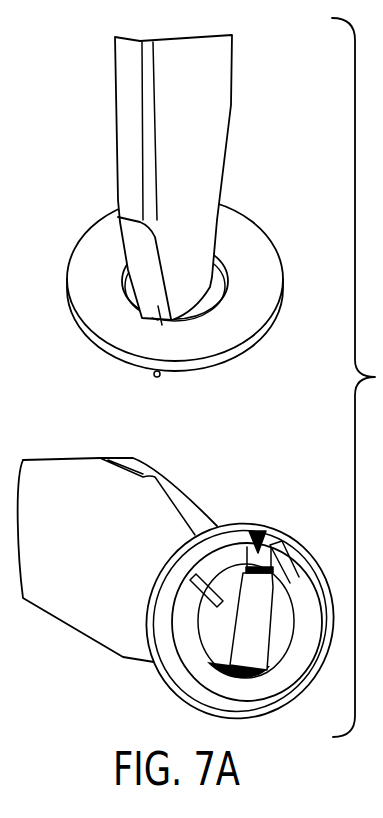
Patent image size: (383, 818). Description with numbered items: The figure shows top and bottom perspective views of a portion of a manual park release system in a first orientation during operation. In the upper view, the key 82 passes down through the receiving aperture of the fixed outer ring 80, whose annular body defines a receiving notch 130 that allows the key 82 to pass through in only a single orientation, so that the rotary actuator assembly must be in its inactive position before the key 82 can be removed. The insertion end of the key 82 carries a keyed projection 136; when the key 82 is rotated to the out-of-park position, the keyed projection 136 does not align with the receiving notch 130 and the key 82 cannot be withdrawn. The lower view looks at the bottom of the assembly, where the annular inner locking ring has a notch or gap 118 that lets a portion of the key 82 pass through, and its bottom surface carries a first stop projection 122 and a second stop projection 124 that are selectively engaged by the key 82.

The outer ring 80 is at (258, 256).
The key 82 is at (217, 62).
The receiving notch 130 is at (157, 326).
The keyed projection 136 is at (160, 308).
The notch or gap 118 is at (252, 540).
The first stop projection 122 is at (287, 568).
The second stop projection 124 is at (192, 580).